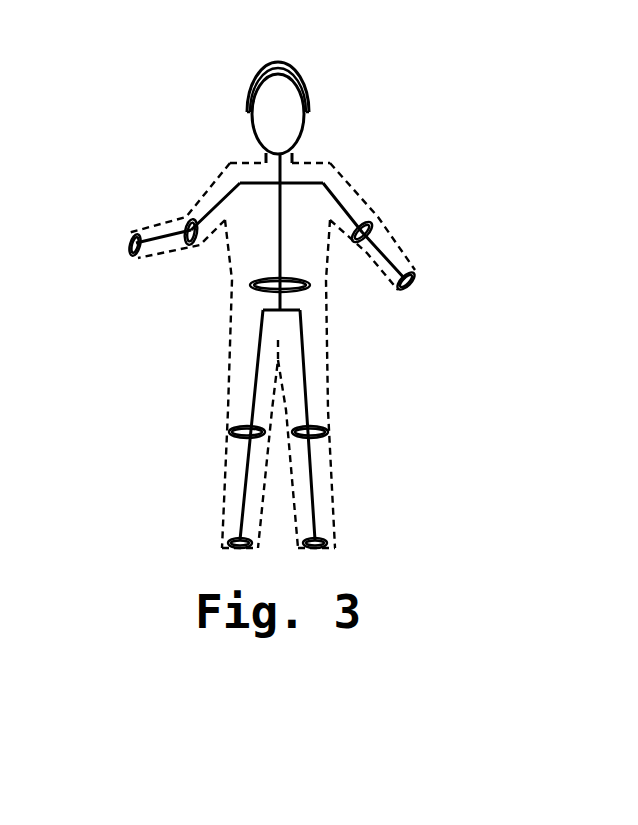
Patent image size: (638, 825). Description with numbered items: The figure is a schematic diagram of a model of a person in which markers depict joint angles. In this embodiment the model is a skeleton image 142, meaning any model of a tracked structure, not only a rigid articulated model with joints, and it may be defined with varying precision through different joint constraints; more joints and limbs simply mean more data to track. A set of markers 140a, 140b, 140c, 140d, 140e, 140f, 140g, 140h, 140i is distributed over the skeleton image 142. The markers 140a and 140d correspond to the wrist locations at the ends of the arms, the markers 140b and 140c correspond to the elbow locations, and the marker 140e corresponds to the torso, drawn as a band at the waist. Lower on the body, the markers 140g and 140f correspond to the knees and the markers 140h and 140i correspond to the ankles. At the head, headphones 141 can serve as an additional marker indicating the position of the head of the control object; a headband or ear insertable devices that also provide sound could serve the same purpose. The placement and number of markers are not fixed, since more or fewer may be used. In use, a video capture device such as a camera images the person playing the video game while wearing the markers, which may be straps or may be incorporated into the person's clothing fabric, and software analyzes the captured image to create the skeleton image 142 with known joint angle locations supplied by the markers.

The headphones 141 is at (296, 59).
The skeleton image 142 is at (271, 304).
The marker 140a is at (450, 270).
The marker 140b is at (408, 223).
The marker 140c is at (152, 217).
The marker 140d is at (99, 235).
The marker 140e is at (324, 300).
The marker 140f is at (209, 423).
The marker 140g is at (354, 423).
The marker 140h is at (202, 533).
The marker 140i is at (359, 533).